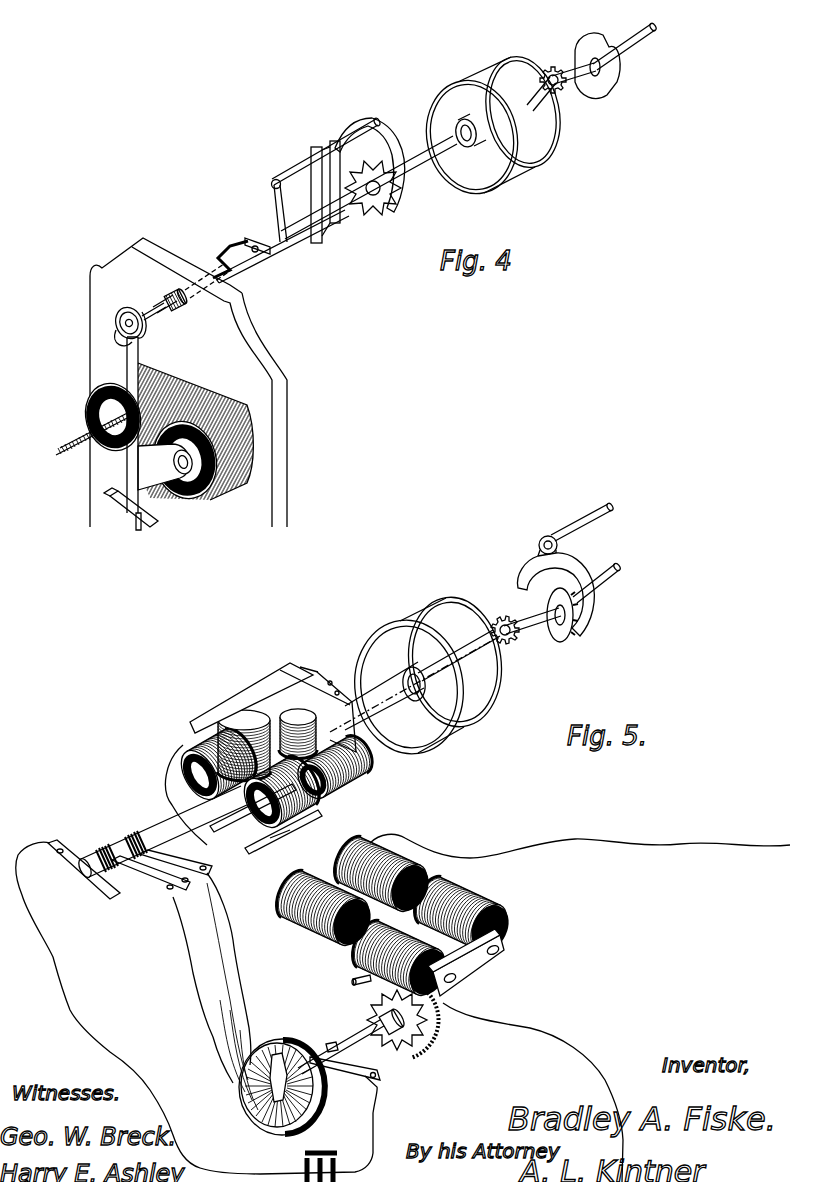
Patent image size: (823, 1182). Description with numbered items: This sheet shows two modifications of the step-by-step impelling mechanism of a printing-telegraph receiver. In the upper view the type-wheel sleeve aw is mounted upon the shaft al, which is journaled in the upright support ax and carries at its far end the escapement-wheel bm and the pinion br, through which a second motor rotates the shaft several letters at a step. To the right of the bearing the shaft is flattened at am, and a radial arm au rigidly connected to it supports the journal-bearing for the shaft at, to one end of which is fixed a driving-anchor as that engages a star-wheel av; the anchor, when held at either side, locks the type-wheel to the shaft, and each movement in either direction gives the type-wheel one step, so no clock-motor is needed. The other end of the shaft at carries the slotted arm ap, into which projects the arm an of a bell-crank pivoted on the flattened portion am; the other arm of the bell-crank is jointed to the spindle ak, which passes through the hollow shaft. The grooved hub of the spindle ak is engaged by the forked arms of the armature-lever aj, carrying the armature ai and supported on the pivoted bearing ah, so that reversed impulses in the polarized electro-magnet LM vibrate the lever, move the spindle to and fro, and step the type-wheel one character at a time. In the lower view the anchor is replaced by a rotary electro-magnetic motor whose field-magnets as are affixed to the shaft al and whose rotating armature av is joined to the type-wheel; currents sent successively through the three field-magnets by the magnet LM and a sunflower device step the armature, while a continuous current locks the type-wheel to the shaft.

In FIG. 4, the pivoted bearing ah is at (140, 527).
In FIG. 4, the armature ai is at (125, 449).
In FIG. 4, the armature-lever aj is at (138, 362).
In FIG. 4, the spindle ak is at (215, 254).
In FIG. 4, the shaft al is at (308, 240).
In FIG. 5, the shaft al is at (610, 580).
In FIG. 4, the flattened portion of the shaft am is at (282, 246).
In FIG. 4, the arm of the bell-crank an is at (255, 236).
In FIG. 4, the arm ap is at (273, 210).
In FIG. 4, the driving-anchor / field-magnets as is at (382, 165).
In FIG. 5, the driving-anchor / field-magnets as is at (183, 768).
In FIG. 4, the shaft at is at (305, 158).
In FIG. 4, the radial arm au is at (320, 200).
In FIG. 4, the star-wheel / rotating armature av is at (385, 215).
In FIG. 5, the star-wheel / rotating armature av is at (318, 672).
In FIG. 4, the type-wheel sleeve aw is at (450, 165).
In FIG. 5, the type-wheel sleeve aw is at (385, 690).
In FIG. 4, the upright support ax is at (188, 382).
In FIG. 4, the pinion br is at (552, 70).
In FIG. 5, the pinion br is at (502, 617).
In FIG. 4, the escapement-wheel bm is at (603, 87).
In FIG. 5, the escapement-wheel bm is at (556, 632).
In FIG. 4, the polarized electro-magnet LM is at (222, 506).
In FIG. 5, the polarized electro-magnet LM is at (477, 903).